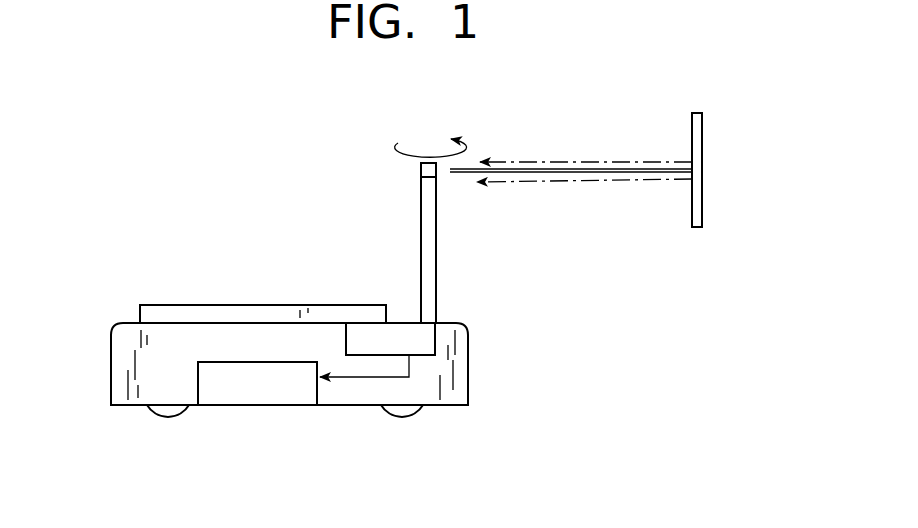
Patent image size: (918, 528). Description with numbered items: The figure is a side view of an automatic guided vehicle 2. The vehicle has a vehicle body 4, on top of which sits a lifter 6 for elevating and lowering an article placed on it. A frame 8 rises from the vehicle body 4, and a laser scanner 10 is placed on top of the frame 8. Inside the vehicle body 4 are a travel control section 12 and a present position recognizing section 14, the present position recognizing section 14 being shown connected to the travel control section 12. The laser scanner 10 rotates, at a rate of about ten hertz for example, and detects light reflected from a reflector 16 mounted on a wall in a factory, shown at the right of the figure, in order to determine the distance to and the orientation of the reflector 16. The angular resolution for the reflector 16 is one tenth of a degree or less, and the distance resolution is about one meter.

The automatic guided vehicle 2 is at (336, 424).
The vehicle body 4 is at (125, 372).
The lifter 6 is at (220, 305).
The frame 8 is at (430, 232).
The laser scanner 10 is at (421, 172).
The travel control section 12 is at (256, 392).
The present position recognizing section 14 is at (401, 332).
The reflector 16 is at (697, 198).